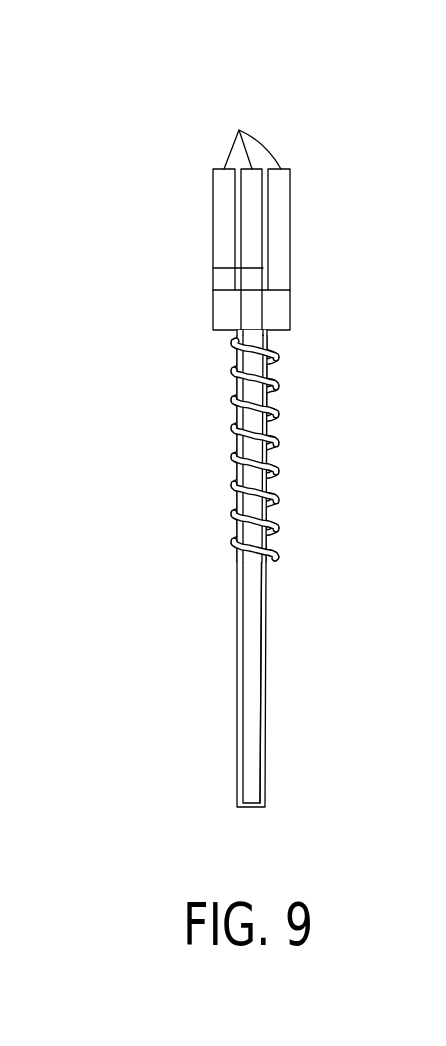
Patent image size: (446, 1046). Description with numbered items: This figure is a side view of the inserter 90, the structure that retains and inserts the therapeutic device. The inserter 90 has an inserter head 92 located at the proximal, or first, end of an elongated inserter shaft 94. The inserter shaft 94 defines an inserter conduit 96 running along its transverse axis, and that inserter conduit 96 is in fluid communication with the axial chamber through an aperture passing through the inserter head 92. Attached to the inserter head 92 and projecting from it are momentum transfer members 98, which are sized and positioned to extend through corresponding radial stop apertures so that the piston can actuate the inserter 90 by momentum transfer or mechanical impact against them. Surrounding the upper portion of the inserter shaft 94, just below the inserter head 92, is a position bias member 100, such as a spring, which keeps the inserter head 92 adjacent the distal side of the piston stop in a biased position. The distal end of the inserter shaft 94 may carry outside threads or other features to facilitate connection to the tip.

The inserter 90 is at (367, 136).
The inserter head 92 is at (290, 306).
The inserter shaft 94 is at (237, 672).
The inserter conduit 96 is at (252, 742).
The momentum transfer member 98 is at (252, 131).
The position bias member 100 is at (232, 426).